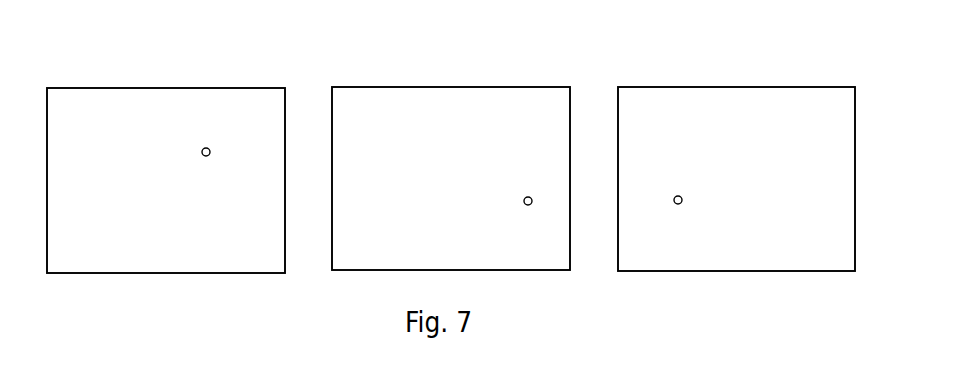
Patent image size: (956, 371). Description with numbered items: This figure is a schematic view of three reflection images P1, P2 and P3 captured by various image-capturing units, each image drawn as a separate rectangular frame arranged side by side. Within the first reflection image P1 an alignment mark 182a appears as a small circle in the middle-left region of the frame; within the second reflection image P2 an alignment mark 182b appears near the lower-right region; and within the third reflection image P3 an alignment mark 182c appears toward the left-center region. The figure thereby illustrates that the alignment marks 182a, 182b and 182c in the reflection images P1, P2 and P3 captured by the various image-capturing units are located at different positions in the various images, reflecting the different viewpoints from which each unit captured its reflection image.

The reflection image P1 is at (163, 88).
The reflection image P2 is at (448, 87).
The reflection image P3 is at (733, 87).
The alignment mark 182a is at (203, 154).
The alignment mark 182b is at (524, 204).
The alignment mark 182c is at (682, 199).